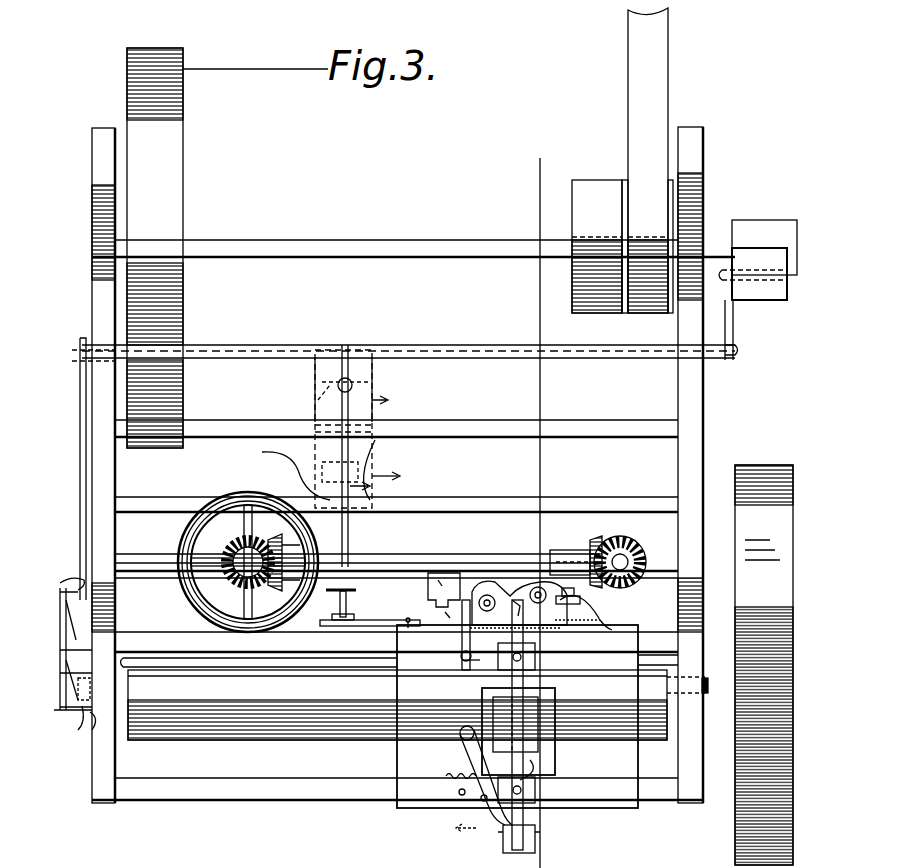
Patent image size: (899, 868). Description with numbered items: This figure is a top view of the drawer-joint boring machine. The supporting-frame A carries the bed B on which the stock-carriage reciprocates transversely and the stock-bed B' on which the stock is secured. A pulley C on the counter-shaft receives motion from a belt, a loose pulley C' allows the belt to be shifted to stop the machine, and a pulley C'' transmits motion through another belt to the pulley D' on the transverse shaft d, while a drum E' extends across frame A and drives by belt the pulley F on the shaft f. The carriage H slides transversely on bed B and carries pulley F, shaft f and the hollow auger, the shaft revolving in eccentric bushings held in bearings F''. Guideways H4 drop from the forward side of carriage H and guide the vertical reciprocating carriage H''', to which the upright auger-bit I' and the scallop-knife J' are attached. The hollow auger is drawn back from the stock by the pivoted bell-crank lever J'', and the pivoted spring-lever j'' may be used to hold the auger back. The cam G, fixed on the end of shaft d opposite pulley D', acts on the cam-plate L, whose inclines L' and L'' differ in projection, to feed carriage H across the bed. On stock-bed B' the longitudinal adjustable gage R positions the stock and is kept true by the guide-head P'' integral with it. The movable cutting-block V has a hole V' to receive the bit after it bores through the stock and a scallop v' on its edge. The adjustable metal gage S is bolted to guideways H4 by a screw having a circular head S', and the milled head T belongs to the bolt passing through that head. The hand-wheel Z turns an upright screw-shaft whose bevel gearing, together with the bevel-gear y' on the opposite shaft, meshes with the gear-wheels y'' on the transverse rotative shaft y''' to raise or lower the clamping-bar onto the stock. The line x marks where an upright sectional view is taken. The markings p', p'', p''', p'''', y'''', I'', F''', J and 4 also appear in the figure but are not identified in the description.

The supporting-frame A is at (100, 470).
The bed for the carriage B is at (396, 713).
The stock-bed B' is at (396, 451).
The pulley C is at (413, 202).
The loose pulley C' is at (622, 160).
The pulley C'' is at (462, 248).
The pulley D' is at (764, 665).
The drum E' is at (397, 705).
The transverse shaft d is at (140, 664).
The longitudinal adjustable gage R is at (370, 538).
The hand wheel Z is at (180, 550).
The bevel-gear y' is at (451, 549).
The gear-wheels y'' is at (281, 569).
The transverse rotative shaft y''' is at (576, 554).
The shaft y'''' is at (396, 550).
The guide-head P'' is at (333, 429).
The pin p' is at (341, 377).
The slot p'' is at (356, 381).
The arm p''' is at (335, 437).
The slide p'''' is at (371, 476).
The milled head T is at (350, 597).
The adjustable metal gage S is at (370, 616).
The circular head S' is at (406, 613).
The movable cutting-block V is at (444, 589).
The scallop v' is at (445, 618).
The hole V' is at (458, 635).
The upright auger-bit I' is at (519, 603).
The lug I'' is at (521, 609).
The carriage H is at (517, 716).
The vertical reciprocating carriage H''' is at (529, 640).
The guideways H4 is at (588, 613).
The scallop-knife J' is at (562, 609).
The pulley F is at (518, 725).
The bearings F'' is at (524, 656).
The lower guide block F''' is at (536, 791).
The reciprocating horizontal shaft f is at (529, 768).
The bottom block J is at (504, 846).
The pivoted bell-crank lever J'' is at (467, 835).
The pivoted spring-lever j'' is at (469, 775).
The cam-plate L is at (64, 649).
The incline L' is at (60, 596).
The incline L'' is at (62, 684).
The pin 4 is at (69, 707).
The cam G is at (73, 724).
The section line X X x is at (540, 501).